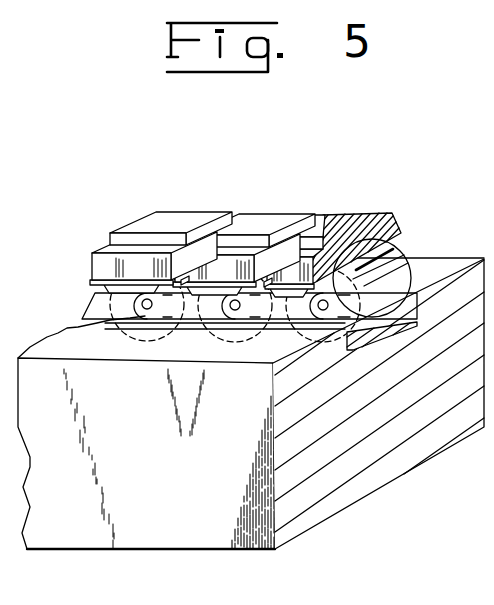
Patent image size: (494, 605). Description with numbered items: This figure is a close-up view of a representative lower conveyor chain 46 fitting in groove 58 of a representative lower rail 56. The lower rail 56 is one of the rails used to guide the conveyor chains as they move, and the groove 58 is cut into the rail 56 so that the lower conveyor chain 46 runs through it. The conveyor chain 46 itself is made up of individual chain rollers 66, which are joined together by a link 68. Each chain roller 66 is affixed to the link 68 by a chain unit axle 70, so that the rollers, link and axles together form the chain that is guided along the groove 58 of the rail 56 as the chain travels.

The lower conveyor chain 46 is at (298, 198).
The lower rail 56 is at (173, 528).
The groove 58 is at (388, 327).
The chain roller 66 is at (393, 248).
The link 68 is at (94, 306).
The chain unit axle 70 is at (147, 310).